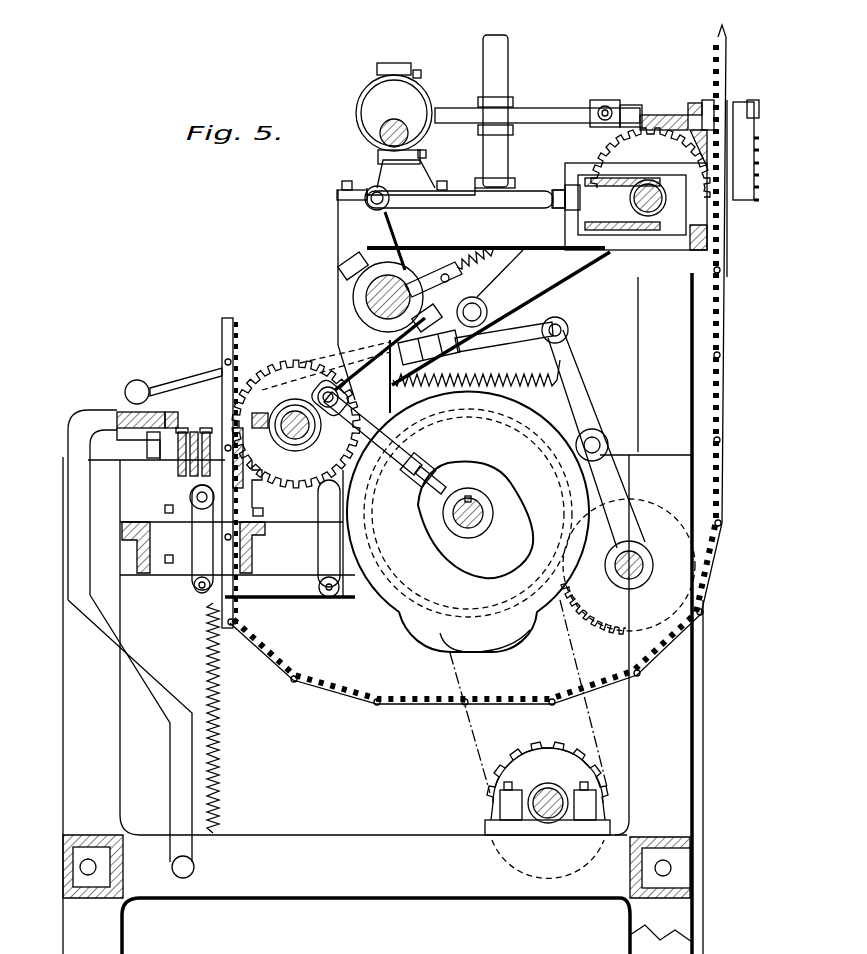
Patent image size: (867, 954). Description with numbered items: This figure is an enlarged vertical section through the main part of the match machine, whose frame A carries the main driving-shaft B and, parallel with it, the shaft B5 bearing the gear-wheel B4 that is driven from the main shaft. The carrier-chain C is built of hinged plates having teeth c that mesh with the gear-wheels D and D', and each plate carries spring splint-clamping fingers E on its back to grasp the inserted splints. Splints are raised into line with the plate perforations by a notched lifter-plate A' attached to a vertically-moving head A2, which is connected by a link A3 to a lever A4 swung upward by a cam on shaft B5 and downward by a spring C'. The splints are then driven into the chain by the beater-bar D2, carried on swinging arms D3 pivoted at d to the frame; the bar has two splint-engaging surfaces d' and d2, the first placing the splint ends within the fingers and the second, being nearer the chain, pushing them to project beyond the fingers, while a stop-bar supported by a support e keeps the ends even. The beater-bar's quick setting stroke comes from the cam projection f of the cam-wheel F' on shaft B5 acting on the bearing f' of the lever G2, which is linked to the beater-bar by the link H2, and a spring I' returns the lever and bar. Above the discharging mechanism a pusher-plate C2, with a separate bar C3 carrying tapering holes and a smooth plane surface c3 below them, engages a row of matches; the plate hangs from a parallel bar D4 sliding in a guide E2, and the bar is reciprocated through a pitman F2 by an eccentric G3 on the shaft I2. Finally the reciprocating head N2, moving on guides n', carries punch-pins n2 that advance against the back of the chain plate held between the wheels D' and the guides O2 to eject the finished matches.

The frame A is at (383, 567).
The notched lifter-plate A' is at (166, 463).
The vertically-moving head A2 is at (185, 497).
The link A3 is at (192, 552).
The lever A4 is at (318, 598).
The main driving-shaft B is at (648, 556).
The gear-wheel B4 is at (548, 478).
The shaft B5 is at (458, 523).
The carrier-chain C is at (491, 378).
The spring C' is at (229, 718).
The pusher-plate C2 is at (652, 115).
The bar C3 is at (692, 128).
The teeth c is at (724, 332).
The smooth plane surface c3 is at (737, 115).
The gear-wheel D is at (311, 406).
The gear-wheel D' is at (636, 162).
The beater-bar D2 is at (125, 398).
The swinging arm D3 is at (70, 505).
The parallel bar D4 is at (632, 105).
The pivot d is at (198, 862).
The splint-engaging surface d' is at (136, 444).
The splint-engaging surface d2 is at (178, 419).
The spring splint-clamping finger E is at (262, 411).
The guide E2 is at (483, 100).
The support e is at (275, 440).
The cam-wheel F' is at (468, 522).
The pitman F2 is at (557, 108).
The cam projection f is at (485, 657).
The bearing f' is at (601, 439).
The lever G2 is at (588, 395).
The eccentric G3 is at (372, 105).
The link H2 is at (190, 390).
The spring I' is at (468, 513).
The shaft I2 is at (378, 147).
The reciprocating head N2 is at (625, 255).
The guide n' is at (632, 226).
The punch-pin n2 is at (670, 205).
The guide O2 is at (729, 242).